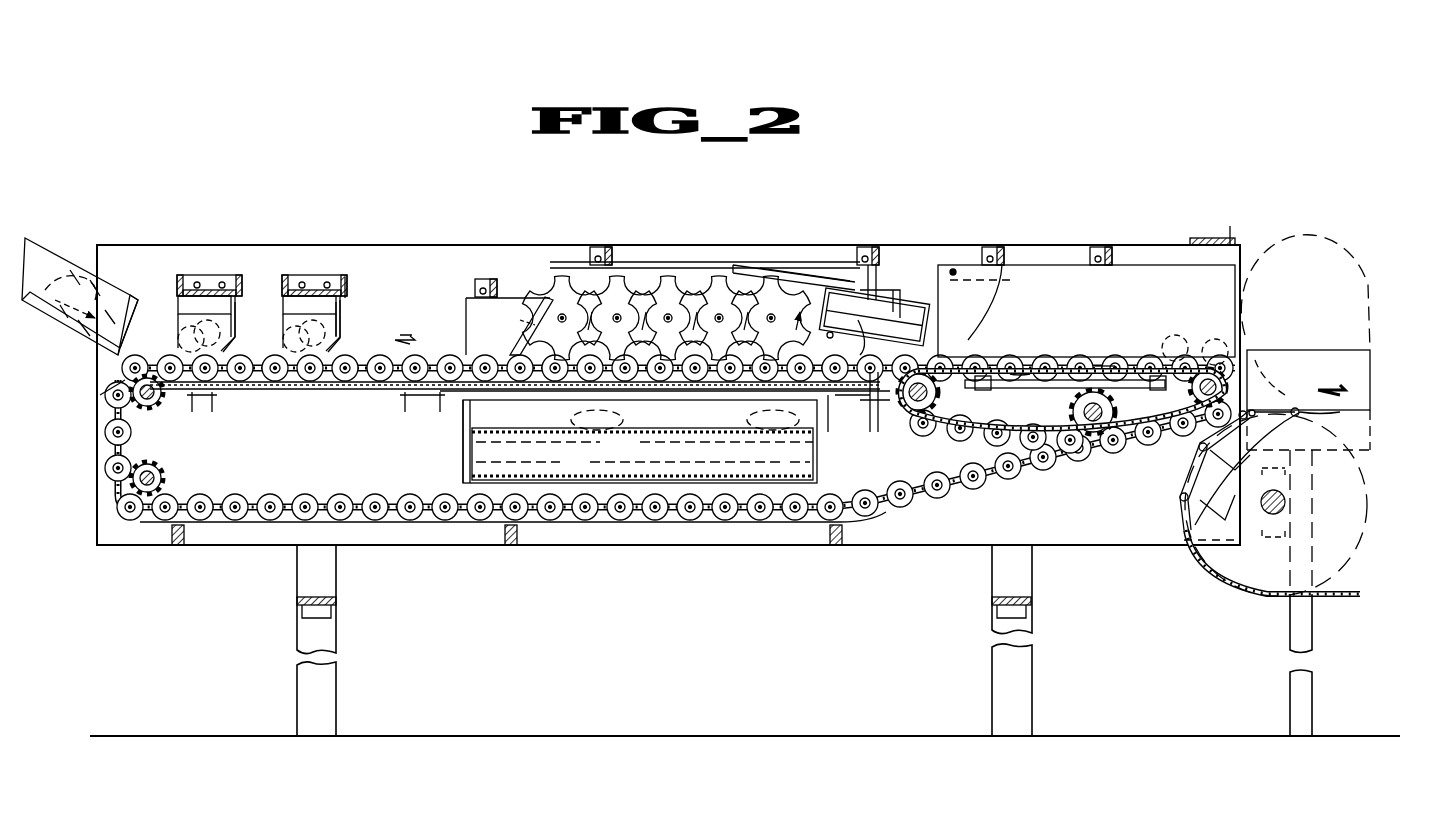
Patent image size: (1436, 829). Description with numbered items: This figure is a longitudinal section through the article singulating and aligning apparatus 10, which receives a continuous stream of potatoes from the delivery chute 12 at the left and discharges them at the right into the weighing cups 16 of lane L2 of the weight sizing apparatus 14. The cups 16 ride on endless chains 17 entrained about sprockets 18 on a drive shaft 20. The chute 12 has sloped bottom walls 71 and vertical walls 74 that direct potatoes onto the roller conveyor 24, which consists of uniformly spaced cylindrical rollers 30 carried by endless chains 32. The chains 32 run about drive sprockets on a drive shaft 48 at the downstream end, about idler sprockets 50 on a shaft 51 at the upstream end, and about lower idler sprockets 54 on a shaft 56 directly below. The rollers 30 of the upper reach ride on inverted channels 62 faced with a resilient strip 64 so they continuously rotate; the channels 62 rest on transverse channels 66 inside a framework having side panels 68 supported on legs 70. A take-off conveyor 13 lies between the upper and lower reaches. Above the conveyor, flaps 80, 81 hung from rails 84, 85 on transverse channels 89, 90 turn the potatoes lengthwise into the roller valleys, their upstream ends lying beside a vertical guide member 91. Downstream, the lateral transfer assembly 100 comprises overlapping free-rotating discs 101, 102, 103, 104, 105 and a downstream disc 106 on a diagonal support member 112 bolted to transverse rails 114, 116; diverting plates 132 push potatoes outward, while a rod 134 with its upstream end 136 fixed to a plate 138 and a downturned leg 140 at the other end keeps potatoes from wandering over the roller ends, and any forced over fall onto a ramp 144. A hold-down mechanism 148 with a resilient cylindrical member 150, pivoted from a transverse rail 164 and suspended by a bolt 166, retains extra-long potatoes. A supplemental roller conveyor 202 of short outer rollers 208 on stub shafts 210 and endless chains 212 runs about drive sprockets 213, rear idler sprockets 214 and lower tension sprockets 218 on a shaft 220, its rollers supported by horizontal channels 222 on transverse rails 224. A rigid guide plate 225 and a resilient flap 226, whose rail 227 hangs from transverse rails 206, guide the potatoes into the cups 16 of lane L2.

The article singulating and aligning apparatus 10 is at (988, 198).
The delivery chute 12 is at (80, 268).
The take-off conveyor 13 is at (465, 428).
The weight sizing apparatus 14 is at (1062, 437).
The weighing cups 16 is at (1200, 490).
The endless chains 17 is at (1232, 598).
The sprockets 18 is at (1215, 556).
The drive shaft 20 is at (1272, 515).
The roller conveyor 24 is at (118, 373).
The rollers 30 is at (322, 384).
The endless chains 32 is at (352, 394).
The drive shaft 48 is at (1210, 358).
The idler sprockets 50 is at (148, 406).
The shaft 51 is at (120, 386).
The idler sprockets 54 is at (162, 466).
The shaft 56 is at (158, 478).
The inverted channels 62 is at (280, 392).
The resilient strip of material 64 is at (275, 388).
The transverse channels 66 is at (206, 404).
The side panels 68 is at (932, 543).
The legs 70 is at (300, 656).
The sloped bottom walls 71 is at (68, 330).
The vertical walls 74 is at (60, 262).
The flaps 80 is at (236, 318).
The flaps 81 is at (340, 328).
The rail 84 is at (212, 298).
The rail 85 is at (342, 313).
The transverse channel 89 is at (275, 292).
The transverse channel 90 is at (340, 298).
The vertical guide member 91 is at (412, 318).
The lateral transfer assembly 100 is at (667, 277).
The disc 101 is at (535, 300).
The disc 102 is at (600, 262).
The disc 103 is at (666, 282).
The disc 104 is at (712, 282).
The disc 105 is at (766, 285).
The downstream disc 106 is at (836, 345).
The support member 112 is at (568, 272).
The transverse rail 114 is at (580, 260).
The transverse rail 116 is at (886, 262).
The diverting plates 132 is at (505, 292).
The rod 134 is at (542, 380).
The upstream end 136 is at (482, 382).
The plate 138 is at (470, 355).
The downturned leg 140 is at (876, 424).
The delivery board or ramp 144 is at (848, 428).
The hold-down mechanism 148 is at (800, 270).
The resilient cylindrical member 150 is at (910, 325).
The transverse rail 164 is at (738, 262).
The bolt 166 is at (868, 246).
The supplemental roller conveyor 202 is at (1148, 358).
The transverse rails 206 is at (1012, 258).
The outer rollers 208 is at (1110, 364).
The stub shafts 210 is at (1030, 364).
The endless chains 212 is at (1000, 366).
The drive sprockets 213 is at (1190, 418).
The rear idler sprockets 214 is at (922, 420).
The lower tension sprockets 218 is at (1093, 425).
The shaft 220 is at (1100, 436).
The horizontal channels 222 is at (1045, 392).
The transverse rails 224 is at (962, 432).
The guide plate 225 is at (1140, 272).
The resilient flap 226 is at (975, 312).
The rail 227 is at (1012, 280).
The lane L2 is at (1290, 385).